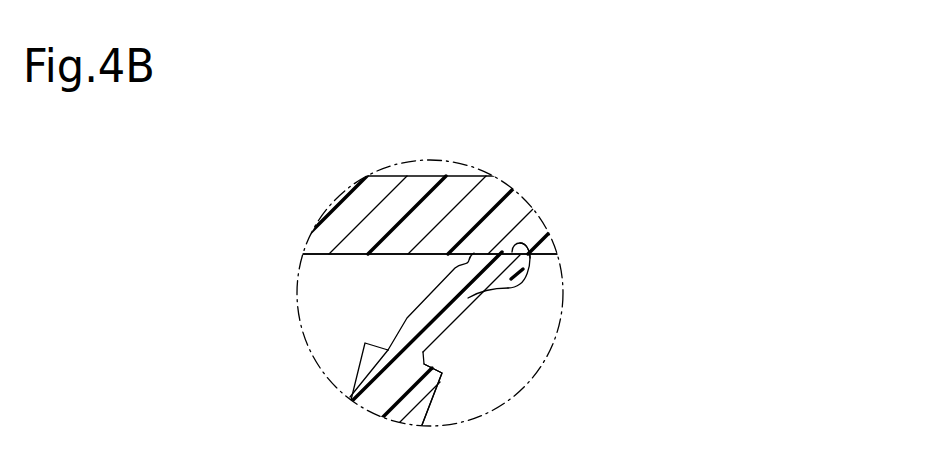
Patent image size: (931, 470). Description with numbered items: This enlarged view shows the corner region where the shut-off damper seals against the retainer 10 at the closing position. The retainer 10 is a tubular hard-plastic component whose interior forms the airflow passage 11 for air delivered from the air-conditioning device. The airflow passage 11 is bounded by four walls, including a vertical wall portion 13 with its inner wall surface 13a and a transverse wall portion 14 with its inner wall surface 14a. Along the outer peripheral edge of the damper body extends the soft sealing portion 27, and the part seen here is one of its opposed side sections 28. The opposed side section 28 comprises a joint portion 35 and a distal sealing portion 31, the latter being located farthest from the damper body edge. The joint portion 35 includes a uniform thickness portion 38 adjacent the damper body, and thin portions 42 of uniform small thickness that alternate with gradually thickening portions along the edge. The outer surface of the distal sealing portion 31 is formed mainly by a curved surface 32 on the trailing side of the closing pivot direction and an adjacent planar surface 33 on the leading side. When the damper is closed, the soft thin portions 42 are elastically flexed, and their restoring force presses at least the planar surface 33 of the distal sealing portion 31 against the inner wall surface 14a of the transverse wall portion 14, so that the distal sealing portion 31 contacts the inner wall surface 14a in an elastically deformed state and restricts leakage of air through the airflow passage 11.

The transverse wall portion 14 is at (519, 199).
The retainer 10 is at (464, 215).
The inner wall surface 14a is at (318, 254).
The inner wall surface 13a is at (545, 329).
The vertical wall portion 13 is at (514, 340).
The thin portion 42 is at (430, 307).
The joint portion 35 is at (406, 330).
The uniform thickness portion 38 is at (349, 383).
The opposed side section 28 is at (425, 408).
The sealing portion 27 is at (493, 405).
The distal sealing portion 31 is at (522, 278).
The curved surface 32 is at (498, 289).
The planar surface 33 is at (528, 252).
The airflow passage 11 is at (506, 376).